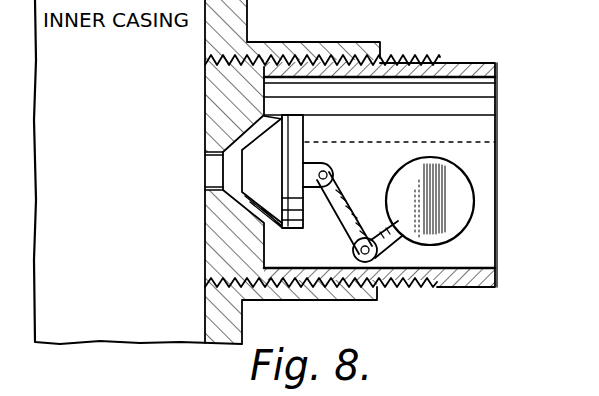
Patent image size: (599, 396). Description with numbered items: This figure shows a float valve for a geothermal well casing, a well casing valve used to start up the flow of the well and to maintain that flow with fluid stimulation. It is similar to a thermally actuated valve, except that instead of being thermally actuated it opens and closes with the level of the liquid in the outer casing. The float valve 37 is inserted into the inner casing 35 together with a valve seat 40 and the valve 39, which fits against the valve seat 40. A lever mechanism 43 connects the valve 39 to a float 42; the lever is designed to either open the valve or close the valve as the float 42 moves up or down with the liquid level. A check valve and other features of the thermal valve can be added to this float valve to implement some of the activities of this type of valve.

The inner casing 35 is at (247, 14).
The float valve 37 is at (440, 62).
The valve 39 is at (297, 117).
The valve seat 40 is at (285, 228).
The float 42 is at (444, 228).
The lever mechanism 43 is at (344, 260).